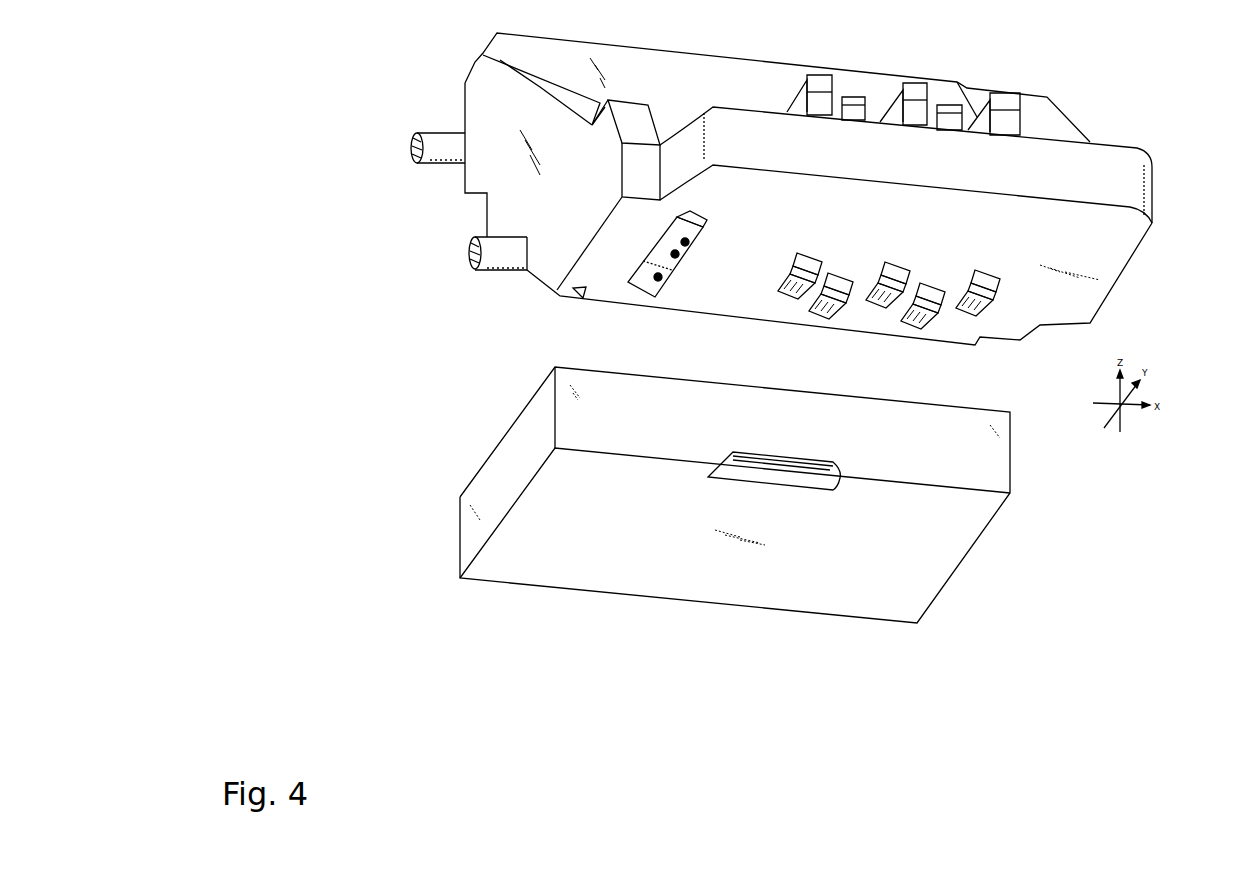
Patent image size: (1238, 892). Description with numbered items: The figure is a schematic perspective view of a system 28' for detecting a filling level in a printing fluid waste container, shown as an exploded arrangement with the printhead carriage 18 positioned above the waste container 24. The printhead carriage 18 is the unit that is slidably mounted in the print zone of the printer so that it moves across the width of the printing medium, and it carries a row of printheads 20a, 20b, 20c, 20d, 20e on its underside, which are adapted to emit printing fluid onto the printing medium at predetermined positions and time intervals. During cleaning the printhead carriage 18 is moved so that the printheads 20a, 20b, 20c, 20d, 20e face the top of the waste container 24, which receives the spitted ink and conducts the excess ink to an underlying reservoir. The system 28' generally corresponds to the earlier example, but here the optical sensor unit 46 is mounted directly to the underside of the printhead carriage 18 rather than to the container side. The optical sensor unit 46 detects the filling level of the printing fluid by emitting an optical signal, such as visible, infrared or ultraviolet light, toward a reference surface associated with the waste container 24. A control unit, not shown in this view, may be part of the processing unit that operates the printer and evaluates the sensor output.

The printhead carriage 18 is at (1135, 237).
The printhead 20a is at (790, 298).
The printhead 20b is at (825, 320).
The printhead 20c is at (900, 262).
The printhead 20d is at (910, 325).
The printhead 20e is at (998, 270).
The waste container 24 is at (972, 545).
The system for detecting a filling level 28' is at (440, 432).
The optical sensor unit 46 is at (640, 295).